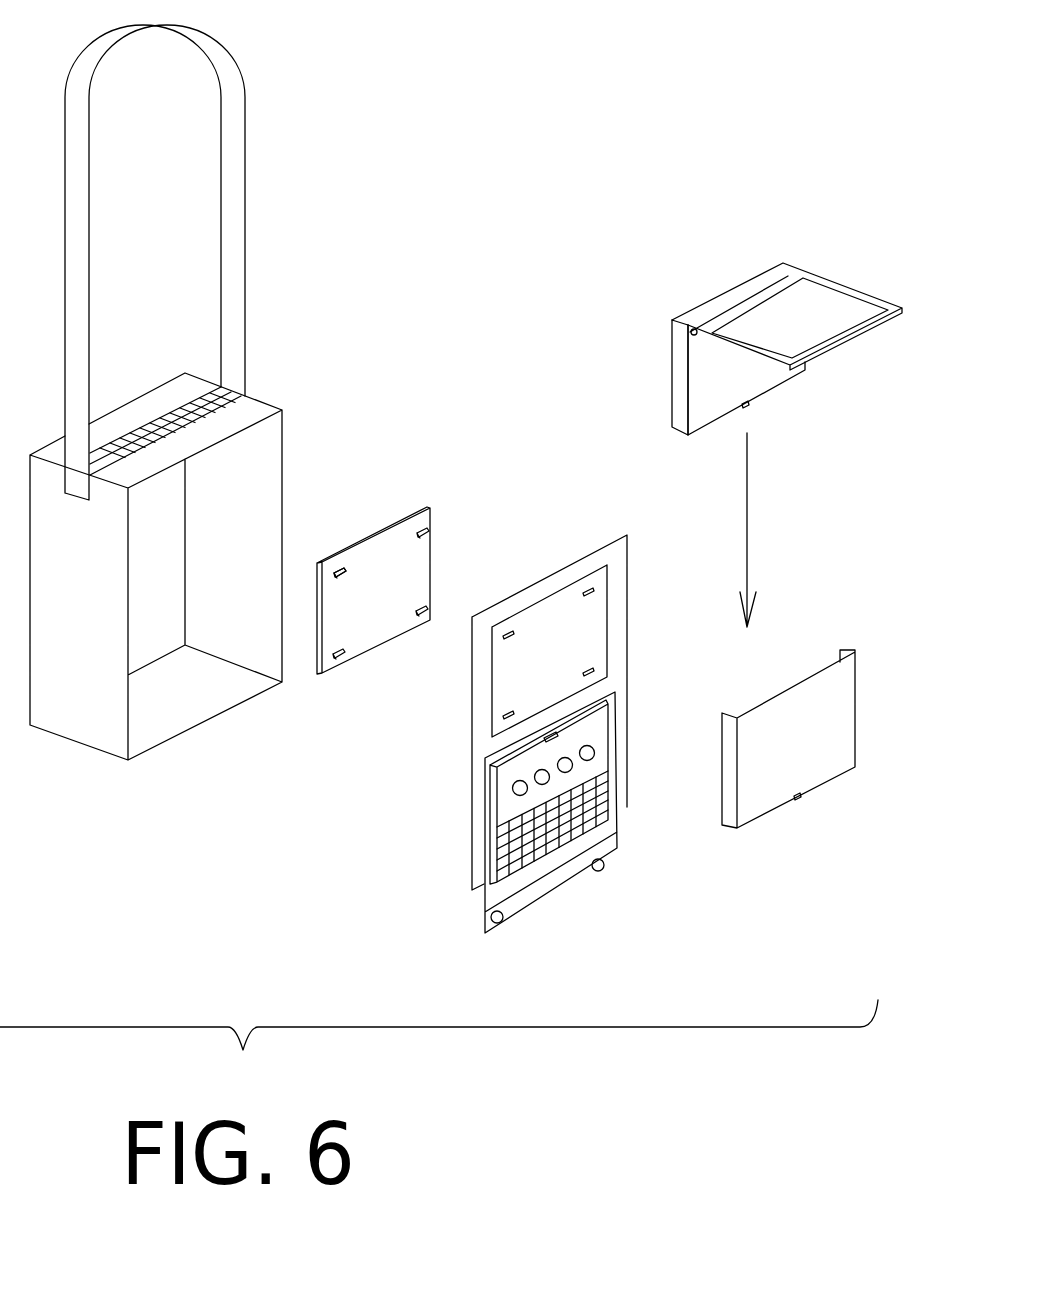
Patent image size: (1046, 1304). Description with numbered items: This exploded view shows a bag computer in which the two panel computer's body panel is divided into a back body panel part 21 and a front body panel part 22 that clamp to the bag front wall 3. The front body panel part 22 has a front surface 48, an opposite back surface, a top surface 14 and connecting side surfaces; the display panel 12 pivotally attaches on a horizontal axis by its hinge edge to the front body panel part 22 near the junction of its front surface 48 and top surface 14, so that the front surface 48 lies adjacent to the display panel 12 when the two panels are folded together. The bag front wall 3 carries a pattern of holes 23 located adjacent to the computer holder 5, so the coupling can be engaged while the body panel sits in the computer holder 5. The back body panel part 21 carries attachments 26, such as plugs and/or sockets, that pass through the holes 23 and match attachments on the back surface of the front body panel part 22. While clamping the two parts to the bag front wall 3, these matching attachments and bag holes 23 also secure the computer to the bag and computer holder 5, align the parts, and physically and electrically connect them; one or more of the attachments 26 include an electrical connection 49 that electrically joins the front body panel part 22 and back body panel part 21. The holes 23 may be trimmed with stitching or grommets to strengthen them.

The bag front wall 3 is at (495, 661).
The computer holder 5 is at (739, 835).
The display panel 12 is at (852, 277).
The top surface 14 is at (777, 252).
The back body panel part 21 is at (340, 596).
The front body panel part 22 is at (727, 304).
The pattern of holes 23 is at (508, 712).
The attachments 26 is at (419, 538).
The front surface 48 is at (750, 372).
The electrical connection 49 is at (340, 567).